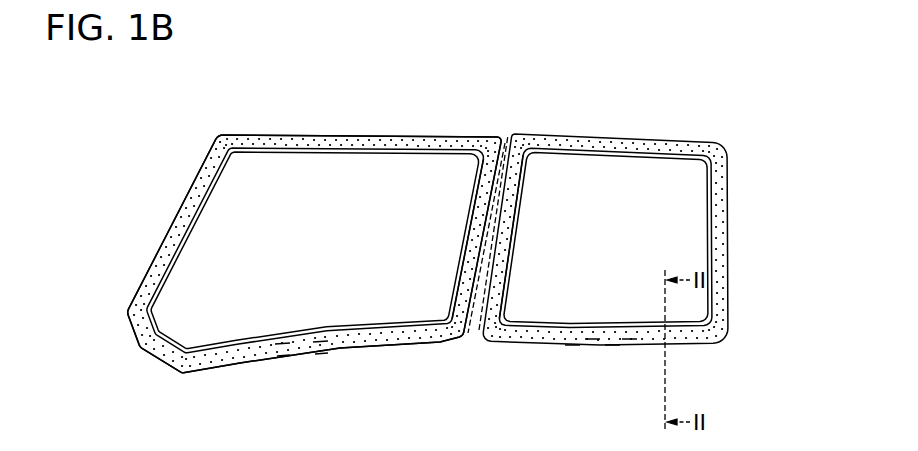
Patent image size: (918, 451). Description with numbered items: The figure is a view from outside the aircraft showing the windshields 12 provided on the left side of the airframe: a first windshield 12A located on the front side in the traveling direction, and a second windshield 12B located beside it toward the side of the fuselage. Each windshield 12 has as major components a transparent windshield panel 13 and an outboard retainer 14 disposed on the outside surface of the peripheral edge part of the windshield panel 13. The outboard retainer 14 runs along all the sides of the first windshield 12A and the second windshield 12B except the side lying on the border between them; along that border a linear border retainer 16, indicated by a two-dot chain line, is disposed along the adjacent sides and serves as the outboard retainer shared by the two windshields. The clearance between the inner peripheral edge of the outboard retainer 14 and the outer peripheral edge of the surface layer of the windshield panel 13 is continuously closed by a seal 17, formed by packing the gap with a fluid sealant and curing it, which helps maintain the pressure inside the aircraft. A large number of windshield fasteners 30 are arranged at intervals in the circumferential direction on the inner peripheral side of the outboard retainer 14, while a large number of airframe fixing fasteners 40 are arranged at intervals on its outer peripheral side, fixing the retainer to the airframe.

The windshield 12 is at (456, 234).
The first windshield 12A is at (314, 234).
The second windshield 12B is at (634, 205).
The windshield panel 13 is at (172, 310).
The outboard retainer 14 is at (218, 137).
The border retainer 16 is at (521, 192).
The seal 17 is at (477, 265).
The windshield fastener 30 is at (282, 347).
The airframe fixing fastener 40 is at (283, 347).